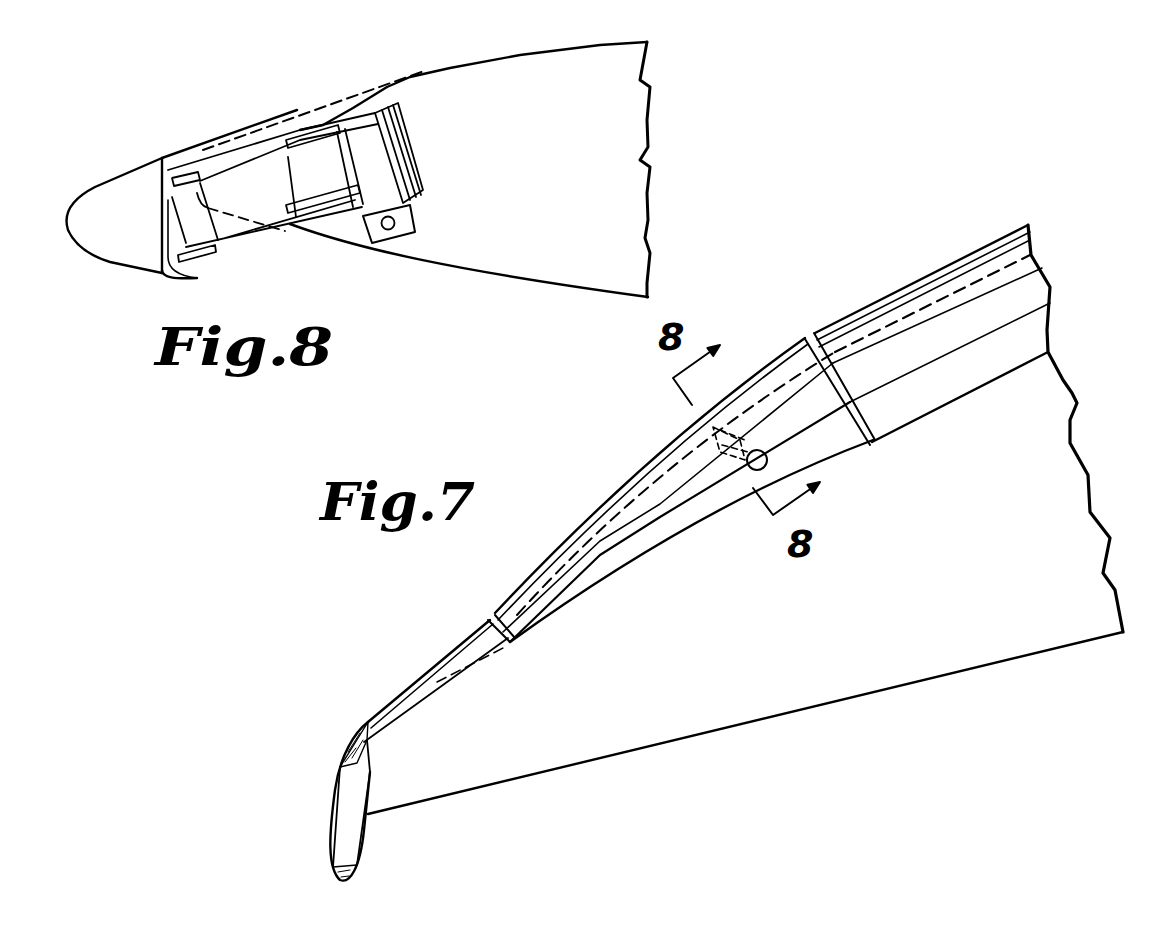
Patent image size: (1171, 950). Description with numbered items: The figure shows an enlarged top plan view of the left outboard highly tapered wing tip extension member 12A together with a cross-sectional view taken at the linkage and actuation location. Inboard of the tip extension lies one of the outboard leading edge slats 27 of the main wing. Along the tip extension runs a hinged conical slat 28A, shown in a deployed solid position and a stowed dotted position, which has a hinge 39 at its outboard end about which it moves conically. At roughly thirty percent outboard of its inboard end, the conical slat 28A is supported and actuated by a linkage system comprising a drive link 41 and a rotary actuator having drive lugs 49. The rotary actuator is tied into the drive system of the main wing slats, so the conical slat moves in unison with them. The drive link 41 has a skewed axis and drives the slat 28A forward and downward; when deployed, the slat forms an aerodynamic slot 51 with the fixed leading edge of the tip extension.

In FIG. 7, the wing tip extension member 12A is at (427, 705).
In FIG. 7, the outboard leading edge slat 27 is at (933, 270).
In FIG. 8, the conical slat 28A is at (95, 188).
In FIG. 7, the conical slat 28A is at (623, 492).
In FIG. 7, the hinge 39 is at (448, 678).
In FIG. 8, the drive link 41 is at (255, 240).
In FIG. 7, the drive link 41 is at (745, 448).
In FIG. 8, the drive lugs 49 is at (420, 155).
In FIG. 7, the drive lugs 49 is at (767, 453).
In FIG. 8, the aerodynamic slot 51 is at (332, 123).